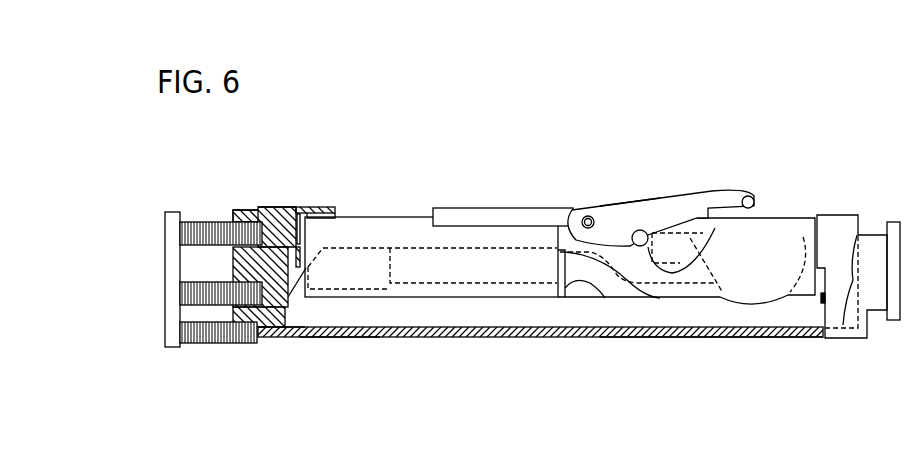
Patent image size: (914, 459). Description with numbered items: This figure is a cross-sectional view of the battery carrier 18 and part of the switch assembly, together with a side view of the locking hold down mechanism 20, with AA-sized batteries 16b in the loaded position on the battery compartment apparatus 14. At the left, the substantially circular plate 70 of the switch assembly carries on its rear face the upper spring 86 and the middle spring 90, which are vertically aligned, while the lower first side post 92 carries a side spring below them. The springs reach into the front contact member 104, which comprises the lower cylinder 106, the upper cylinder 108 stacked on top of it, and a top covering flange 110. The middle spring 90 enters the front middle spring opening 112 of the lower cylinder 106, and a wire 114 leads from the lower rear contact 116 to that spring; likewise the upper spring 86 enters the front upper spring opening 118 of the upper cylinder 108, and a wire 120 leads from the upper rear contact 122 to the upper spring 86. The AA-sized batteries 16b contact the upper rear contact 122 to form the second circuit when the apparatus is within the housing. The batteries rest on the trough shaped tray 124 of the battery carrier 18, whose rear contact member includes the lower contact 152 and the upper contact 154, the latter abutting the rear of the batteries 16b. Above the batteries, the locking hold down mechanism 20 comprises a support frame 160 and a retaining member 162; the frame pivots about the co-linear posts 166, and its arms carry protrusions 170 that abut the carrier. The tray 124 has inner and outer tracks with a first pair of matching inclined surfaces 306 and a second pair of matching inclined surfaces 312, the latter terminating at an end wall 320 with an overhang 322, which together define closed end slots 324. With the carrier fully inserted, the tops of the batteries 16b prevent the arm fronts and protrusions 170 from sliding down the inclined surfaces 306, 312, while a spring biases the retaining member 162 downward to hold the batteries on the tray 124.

The battery compartment apparatus 14 is at (893, 222).
The AA-sized batteries 16b is at (788, 218).
The battery carrier 18 is at (710, 348).
The locking hold down mechanism 20 is at (628, 194).
The substantially circular plate 70 is at (166, 275).
The upper spring 86 is at (195, 220).
The middle spring 90 is at (186, 282).
The lower first side post 92 is at (188, 343).
The front contact member 104 is at (266, 203).
The lower cylinder 106 is at (302, 335).
The upper cylinder 108 is at (337, 213).
The top covering flange 110 is at (313, 207).
The front middle spring opening 112 is at (240, 347).
The wire 114 is at (337, 337).
The lower rear contact 116 is at (289, 300).
The front upper spring opening 118 is at (243, 213).
The wire 120 is at (275, 207).
The upper rear contact 122 is at (306, 262).
The trough shaped tray 124 is at (518, 338).
The lower contact 152 is at (821, 303).
The upper contact 154 is at (808, 250).
The support frame 160 is at (680, 192).
The retaining member 162 is at (483, 208).
The co-linear posts 166 is at (750, 196).
The protrusions 170 is at (640, 238).
The first pair of matching inclined surfaces 306 is at (605, 298).
The second pair of matching inclined surfaces 312 is at (661, 273).
The end wall 320 is at (682, 273).
The overhang 322 is at (670, 252).
The closed end slots 324 is at (677, 283).